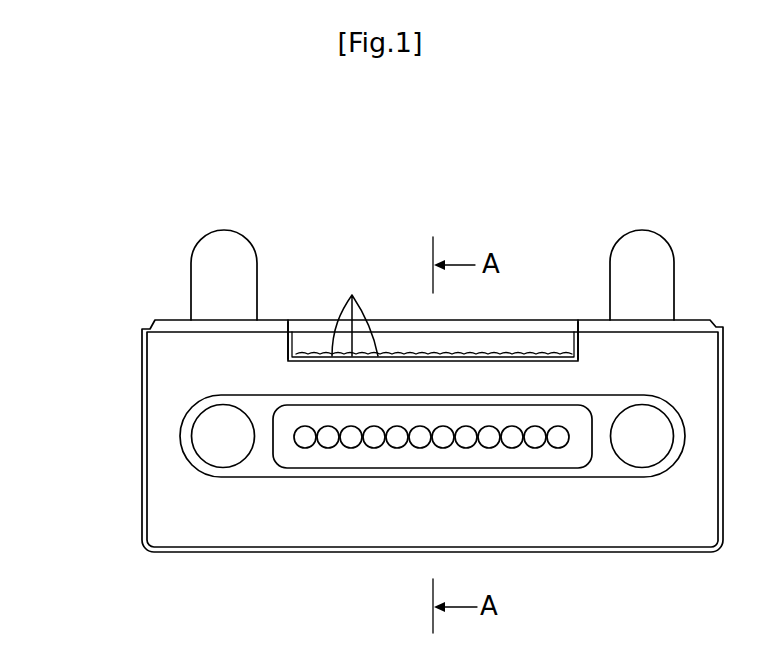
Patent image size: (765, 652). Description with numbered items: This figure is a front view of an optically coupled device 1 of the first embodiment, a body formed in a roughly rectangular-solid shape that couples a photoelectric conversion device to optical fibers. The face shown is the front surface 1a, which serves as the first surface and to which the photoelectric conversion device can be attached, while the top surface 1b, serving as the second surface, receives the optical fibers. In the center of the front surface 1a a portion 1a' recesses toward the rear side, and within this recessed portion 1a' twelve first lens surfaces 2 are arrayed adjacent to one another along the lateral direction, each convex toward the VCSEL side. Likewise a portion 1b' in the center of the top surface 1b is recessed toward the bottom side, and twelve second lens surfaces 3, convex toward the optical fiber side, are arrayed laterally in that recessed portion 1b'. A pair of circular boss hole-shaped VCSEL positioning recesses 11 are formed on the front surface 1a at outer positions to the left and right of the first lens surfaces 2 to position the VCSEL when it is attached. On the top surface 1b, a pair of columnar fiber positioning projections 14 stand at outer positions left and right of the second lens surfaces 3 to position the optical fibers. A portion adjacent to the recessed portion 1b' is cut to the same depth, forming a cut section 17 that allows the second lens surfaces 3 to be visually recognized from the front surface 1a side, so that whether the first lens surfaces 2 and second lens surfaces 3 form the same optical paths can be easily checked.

The optically coupled device 1 is at (119, 192).
The front surface 1a is at (376, 436).
The recessed portion 1a' is at (432, 506).
The top surface 1b is at (424, 282).
The recessed portion 1b' is at (539, 281).
The first lens surfaces 2 is at (467, 448).
The second lens surfaces 3 is at (355, 309).
The VCSEL positioning recesses 11 is at (203, 458).
The fiber positioning projections 14 is at (225, 231).
The cut section 17 is at (294, 341).